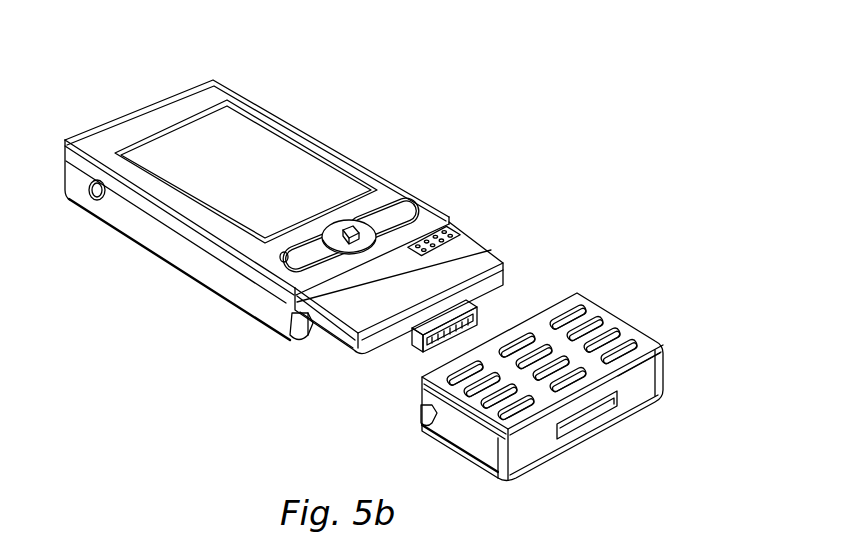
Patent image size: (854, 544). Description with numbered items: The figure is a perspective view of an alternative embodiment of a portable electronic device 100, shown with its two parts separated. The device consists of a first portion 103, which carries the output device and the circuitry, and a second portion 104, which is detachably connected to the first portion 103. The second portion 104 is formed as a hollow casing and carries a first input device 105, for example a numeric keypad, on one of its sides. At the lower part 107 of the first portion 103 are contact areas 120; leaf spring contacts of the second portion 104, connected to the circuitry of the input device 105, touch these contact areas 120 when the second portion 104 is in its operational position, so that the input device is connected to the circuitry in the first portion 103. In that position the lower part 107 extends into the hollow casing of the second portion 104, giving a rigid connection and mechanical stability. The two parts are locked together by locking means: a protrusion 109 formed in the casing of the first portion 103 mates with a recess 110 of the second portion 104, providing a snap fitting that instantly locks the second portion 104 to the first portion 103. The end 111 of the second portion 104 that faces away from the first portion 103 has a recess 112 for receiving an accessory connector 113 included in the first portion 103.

The portable electronic device 100 is at (286, 68).
The first portion 103 is at (322, 151).
The second portion 104 is at (634, 360).
The first input device 105 is at (578, 310).
The lower part 107 is at (473, 262).
The protrusion 109 is at (292, 332).
The recess 110 is at (424, 418).
The end 111 is at (638, 392).
The recess 112 is at (572, 430).
The accessory connector 113 is at (406, 356).
The contact areas 120 is at (455, 232).